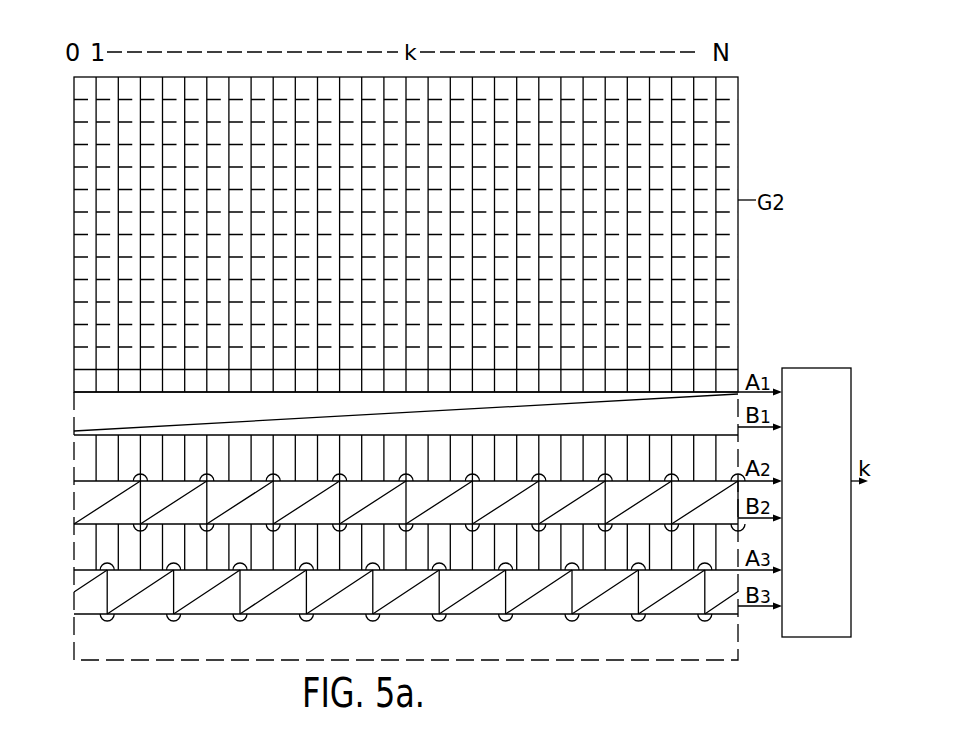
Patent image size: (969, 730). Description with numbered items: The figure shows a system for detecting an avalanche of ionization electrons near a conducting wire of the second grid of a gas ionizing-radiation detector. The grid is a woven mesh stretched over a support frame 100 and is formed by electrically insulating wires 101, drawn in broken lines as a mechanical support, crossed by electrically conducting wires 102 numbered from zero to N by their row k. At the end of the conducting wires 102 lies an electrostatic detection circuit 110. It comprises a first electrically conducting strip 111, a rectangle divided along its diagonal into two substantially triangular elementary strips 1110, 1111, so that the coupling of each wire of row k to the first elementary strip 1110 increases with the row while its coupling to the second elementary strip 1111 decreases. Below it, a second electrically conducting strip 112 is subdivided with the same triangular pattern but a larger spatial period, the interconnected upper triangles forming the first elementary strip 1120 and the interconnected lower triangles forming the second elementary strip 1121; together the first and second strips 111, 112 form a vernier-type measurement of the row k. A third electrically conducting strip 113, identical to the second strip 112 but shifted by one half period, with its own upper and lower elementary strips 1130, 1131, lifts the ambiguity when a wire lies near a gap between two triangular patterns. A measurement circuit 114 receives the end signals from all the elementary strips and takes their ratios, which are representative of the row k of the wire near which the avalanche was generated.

The support frame 100 is at (387, 200).
The electrically insulating wires 101 is at (110, 122).
The electrically conducting wires 102 is at (68, 108).
The electrostatic detection circuit 110 is at (74, 457).
The first electrically conducting strip 111 is at (378, 405).
The first elementary strip 1110 is at (98, 405).
The second elementary strip 1111 is at (74, 410).
The second electrically conducting strip 112 is at (381, 512).
The first elementary strip of the second strip 1120 is at (93, 487).
The second elementary strip of the second strip 1121 is at (113, 514).
The third electrically conducting strip 113 is at (380, 593).
The first elementary strip of the third strip 1130 is at (85, 575).
The second elementary strip of the third strip 1131 is at (90, 602).
The measurement circuit 114 is at (812, 368).